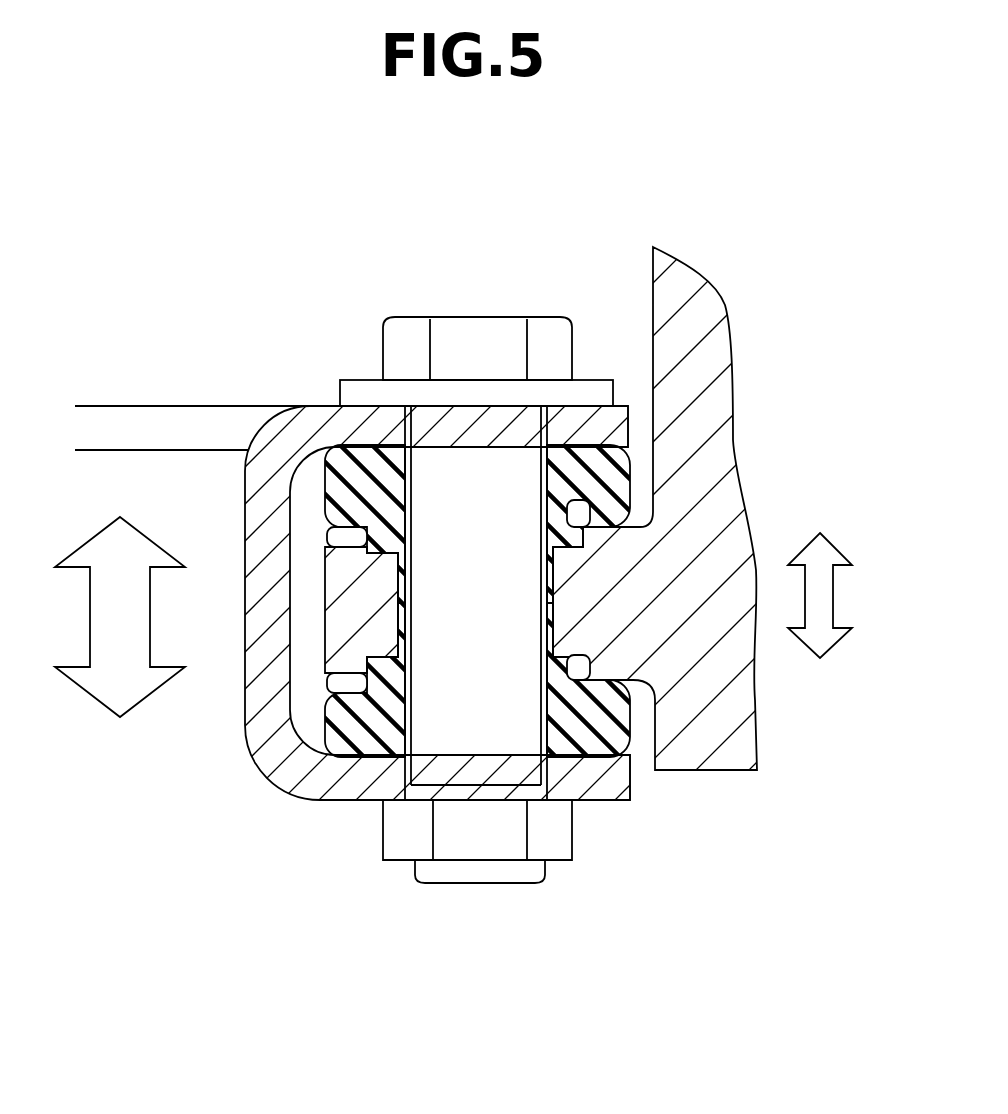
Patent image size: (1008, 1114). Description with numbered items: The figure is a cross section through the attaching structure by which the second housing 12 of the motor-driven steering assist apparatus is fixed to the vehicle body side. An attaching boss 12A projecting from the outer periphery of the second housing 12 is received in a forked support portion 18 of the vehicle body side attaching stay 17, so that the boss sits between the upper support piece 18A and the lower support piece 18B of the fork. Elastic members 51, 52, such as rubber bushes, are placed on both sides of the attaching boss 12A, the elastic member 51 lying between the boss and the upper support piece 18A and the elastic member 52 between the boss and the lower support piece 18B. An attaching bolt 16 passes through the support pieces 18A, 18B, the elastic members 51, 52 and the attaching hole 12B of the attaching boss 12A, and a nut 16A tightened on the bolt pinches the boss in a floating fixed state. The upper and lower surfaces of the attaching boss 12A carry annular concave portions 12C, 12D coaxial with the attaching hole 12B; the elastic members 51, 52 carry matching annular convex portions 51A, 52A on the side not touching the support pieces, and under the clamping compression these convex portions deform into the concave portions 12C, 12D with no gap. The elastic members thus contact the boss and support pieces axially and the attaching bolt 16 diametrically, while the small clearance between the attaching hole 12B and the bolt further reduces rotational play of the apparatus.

The second housing 12 is at (725, 718).
The attaching boss 12A is at (345, 613).
The attaching hole 12B is at (541, 610).
The annular concave portion 12C is at (600, 497).
The annular concave portion 12D is at (563, 698).
The attaching bolt 16 is at (452, 333).
The nut 16A is at (403, 845).
The vehicle body side attaching stay 17 is at (125, 415).
The forked support portion 18 is at (340, 803).
The upper support piece 18A is at (583, 418).
The lower support piece 18B is at (373, 777).
The elastic member 51 is at (367, 487).
The annular convex portion 51A is at (380, 542).
The elastic member 52 is at (322, 758).
The annular convex portion 52A is at (360, 735).